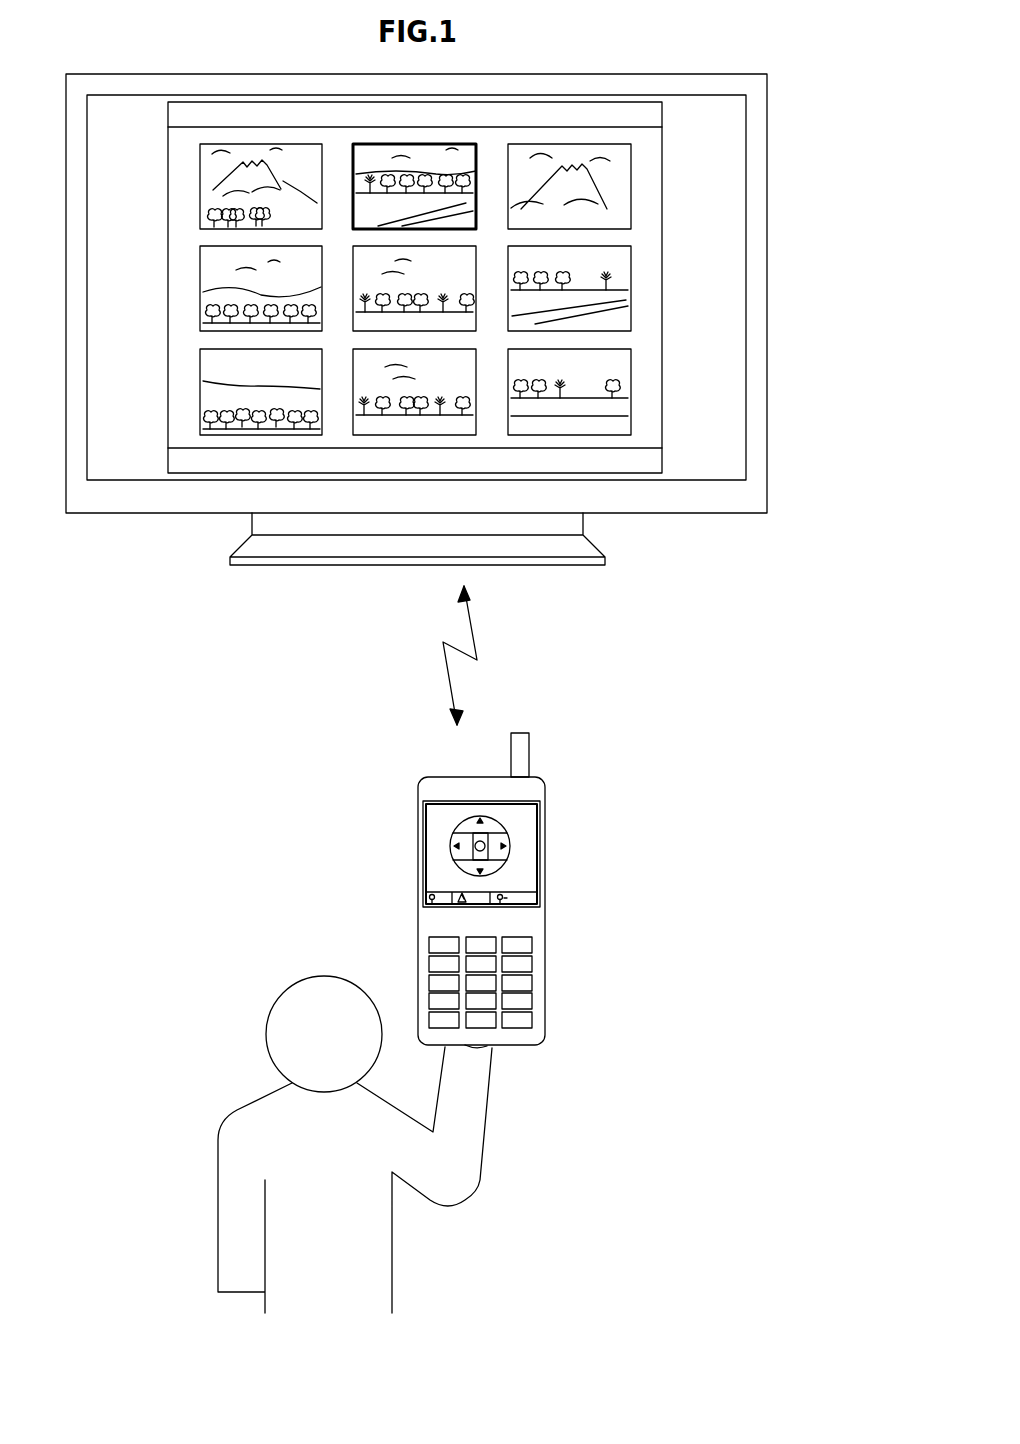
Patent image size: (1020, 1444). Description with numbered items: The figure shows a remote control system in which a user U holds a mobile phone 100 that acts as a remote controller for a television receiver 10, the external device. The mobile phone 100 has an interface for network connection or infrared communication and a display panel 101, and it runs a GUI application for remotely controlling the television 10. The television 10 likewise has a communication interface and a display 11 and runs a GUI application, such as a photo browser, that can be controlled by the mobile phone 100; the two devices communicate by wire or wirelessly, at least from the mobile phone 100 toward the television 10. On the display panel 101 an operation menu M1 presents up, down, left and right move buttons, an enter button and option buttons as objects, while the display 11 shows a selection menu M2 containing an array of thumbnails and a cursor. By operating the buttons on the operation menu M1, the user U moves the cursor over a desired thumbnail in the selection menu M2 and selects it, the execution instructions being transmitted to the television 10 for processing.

The television receiver 10 is at (443, 297).
The display 11 is at (454, 287).
The selection menu M2 is at (663, 267).
The mobile phone 100 is at (525, 889).
The display panel 101 is at (528, 854).
The operation menu M1 is at (526, 878).
The user U is at (480, 1158).